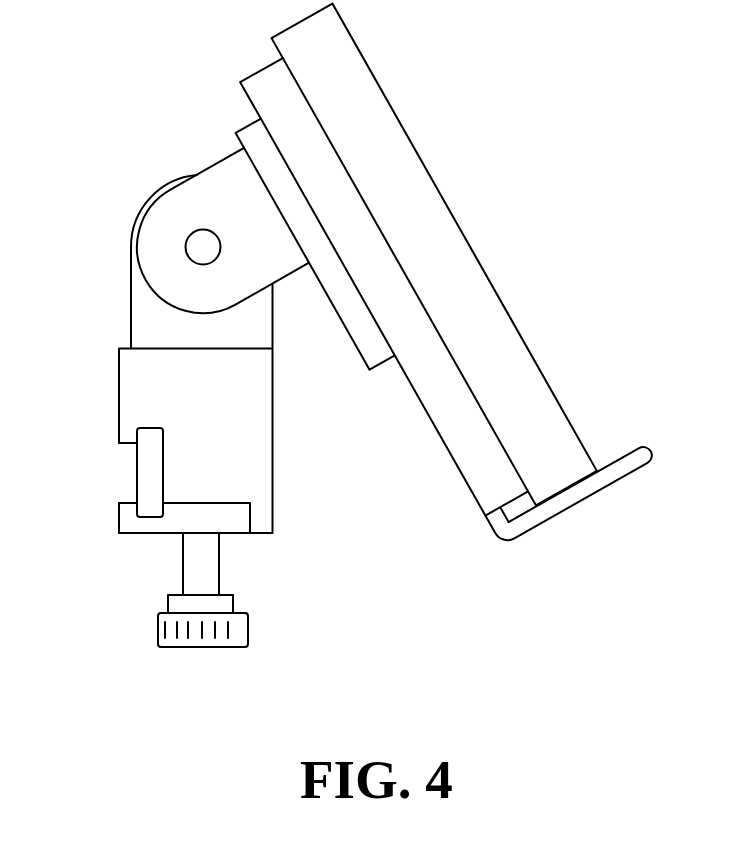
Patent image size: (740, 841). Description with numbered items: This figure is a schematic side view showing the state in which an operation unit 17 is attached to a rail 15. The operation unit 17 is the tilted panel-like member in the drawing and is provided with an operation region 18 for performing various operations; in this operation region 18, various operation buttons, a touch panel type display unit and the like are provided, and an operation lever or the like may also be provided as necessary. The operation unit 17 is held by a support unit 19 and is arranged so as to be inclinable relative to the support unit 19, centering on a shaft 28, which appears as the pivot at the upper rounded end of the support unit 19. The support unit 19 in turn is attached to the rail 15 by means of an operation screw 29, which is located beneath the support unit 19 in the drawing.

The rail 15 is at (150, 472).
The operation unit 17 is at (477, 149).
The operation region 18 is at (518, 320).
The support unit 19 is at (252, 432).
The shaft 28 is at (200, 240).
The operation screw 29 is at (237, 628).